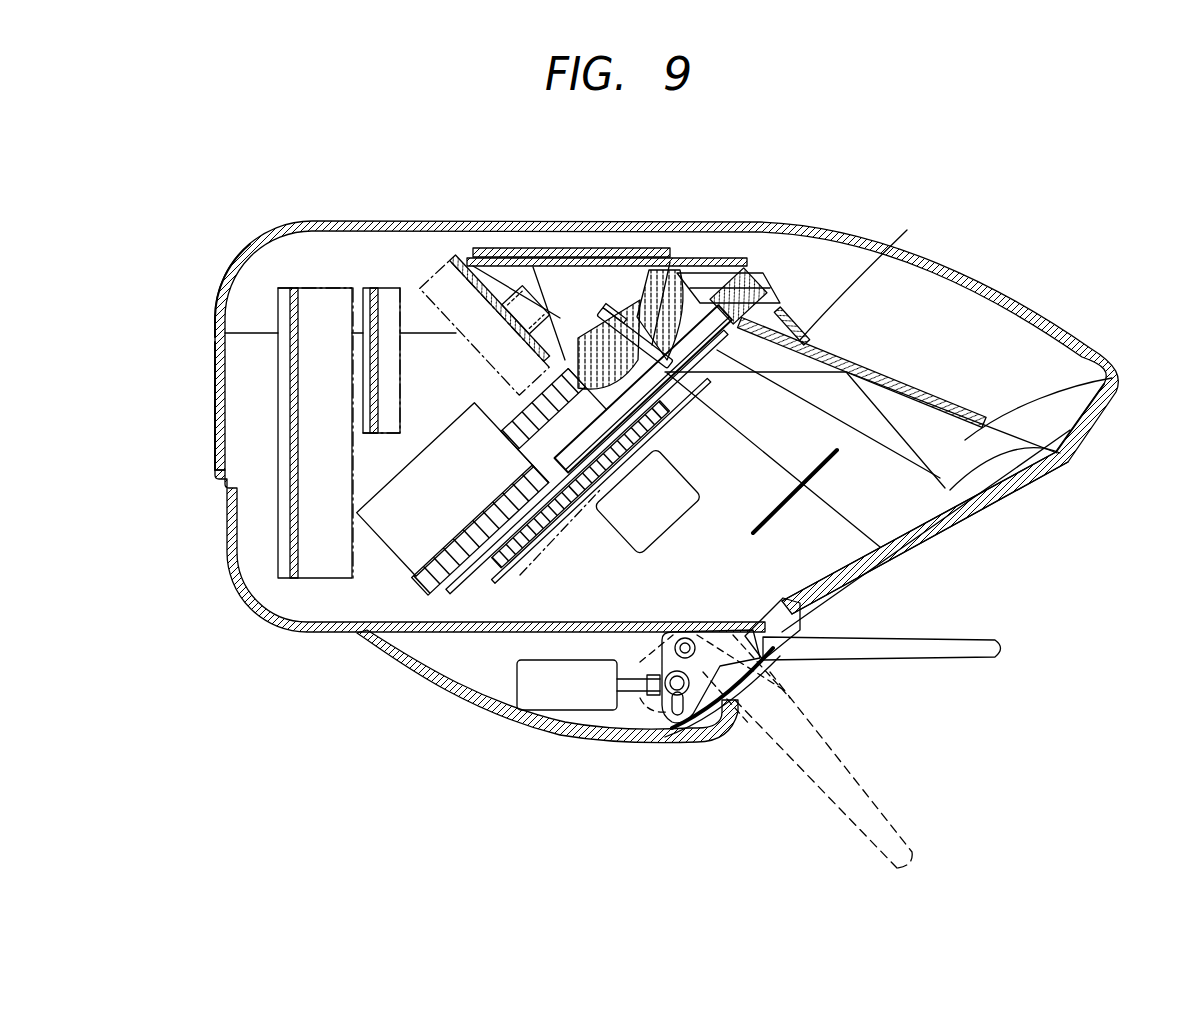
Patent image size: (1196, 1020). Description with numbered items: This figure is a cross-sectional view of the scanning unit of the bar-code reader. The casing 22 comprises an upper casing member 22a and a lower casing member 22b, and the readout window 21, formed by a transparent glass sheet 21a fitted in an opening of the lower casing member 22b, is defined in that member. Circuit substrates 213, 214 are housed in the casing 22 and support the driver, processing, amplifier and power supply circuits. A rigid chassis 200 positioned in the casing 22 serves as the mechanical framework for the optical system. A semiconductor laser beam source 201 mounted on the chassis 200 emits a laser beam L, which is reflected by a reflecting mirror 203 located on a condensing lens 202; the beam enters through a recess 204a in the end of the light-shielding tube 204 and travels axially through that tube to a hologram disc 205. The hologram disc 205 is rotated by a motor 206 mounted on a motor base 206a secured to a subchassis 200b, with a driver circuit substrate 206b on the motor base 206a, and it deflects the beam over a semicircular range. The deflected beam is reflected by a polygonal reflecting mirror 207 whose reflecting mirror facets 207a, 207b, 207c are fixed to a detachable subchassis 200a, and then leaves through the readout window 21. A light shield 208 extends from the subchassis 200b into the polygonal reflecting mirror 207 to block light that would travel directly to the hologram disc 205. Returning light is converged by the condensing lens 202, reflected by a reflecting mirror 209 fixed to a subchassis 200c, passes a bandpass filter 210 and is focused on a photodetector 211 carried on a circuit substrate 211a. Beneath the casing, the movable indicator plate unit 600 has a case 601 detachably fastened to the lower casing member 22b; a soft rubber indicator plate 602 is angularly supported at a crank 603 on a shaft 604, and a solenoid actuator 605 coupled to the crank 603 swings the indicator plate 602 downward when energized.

The casing 22 is at (295, 196).
The upper casing member 22a is at (215, 305).
The lower casing member 22b is at (214, 363).
The circuit substrate 214 is at (292, 288).
The circuit substrate 213 is at (374, 290).
The photodetector 211 is at (482, 256).
The circuit substrate 211a is at (445, 264).
The reflecting mirror 209 is at (514, 296).
The bandpass filter 210 is at (565, 258).
The recess 204a is at (600, 300).
The reflecting mirror 203 is at (655, 290).
The subchassis 200c is at (722, 272).
The condensing lens 202 is at (705, 305).
The light-shielding tube 204 is at (768, 292).
The chassis 200 is at (782, 266).
The subchassis 200a is at (870, 262).
The polygonal reflecting mirror 207 is at (985, 412).
The reflecting mirror facet 207c is at (1116, 386).
The reflecting mirror facet 207b is at (1060, 471).
The readout window 21 is at (1010, 497).
The laser beam L is at (995, 547).
The reflecting mirror facet 207a is at (930, 548).
The transparent glass sheet 21a is at (888, 568).
The semiconductor laser beam source 201 is at (385, 600).
The hologram disc 205 is at (487, 590).
The subchassis 200b is at (505, 590).
The motor base 206a is at (548, 710).
The solenoid actuator 605 is at (625, 692).
The driver circuit substrate 206b is at (632, 728).
The case 601 is at (640, 742).
The movable indicator plate unit 600 is at (672, 750).
The crank 603 is at (705, 730).
The shaft 604 is at (742, 738).
The motor 206 is at (738, 592).
The light shield 208 is at (852, 612).
The indicator plate 602 is at (975, 658).